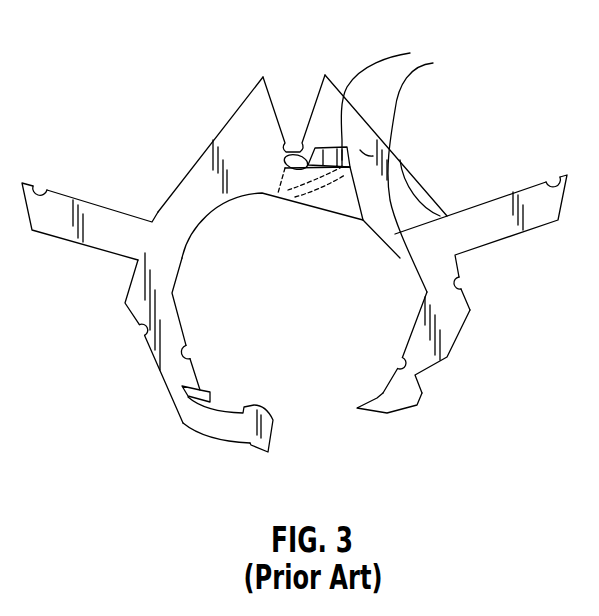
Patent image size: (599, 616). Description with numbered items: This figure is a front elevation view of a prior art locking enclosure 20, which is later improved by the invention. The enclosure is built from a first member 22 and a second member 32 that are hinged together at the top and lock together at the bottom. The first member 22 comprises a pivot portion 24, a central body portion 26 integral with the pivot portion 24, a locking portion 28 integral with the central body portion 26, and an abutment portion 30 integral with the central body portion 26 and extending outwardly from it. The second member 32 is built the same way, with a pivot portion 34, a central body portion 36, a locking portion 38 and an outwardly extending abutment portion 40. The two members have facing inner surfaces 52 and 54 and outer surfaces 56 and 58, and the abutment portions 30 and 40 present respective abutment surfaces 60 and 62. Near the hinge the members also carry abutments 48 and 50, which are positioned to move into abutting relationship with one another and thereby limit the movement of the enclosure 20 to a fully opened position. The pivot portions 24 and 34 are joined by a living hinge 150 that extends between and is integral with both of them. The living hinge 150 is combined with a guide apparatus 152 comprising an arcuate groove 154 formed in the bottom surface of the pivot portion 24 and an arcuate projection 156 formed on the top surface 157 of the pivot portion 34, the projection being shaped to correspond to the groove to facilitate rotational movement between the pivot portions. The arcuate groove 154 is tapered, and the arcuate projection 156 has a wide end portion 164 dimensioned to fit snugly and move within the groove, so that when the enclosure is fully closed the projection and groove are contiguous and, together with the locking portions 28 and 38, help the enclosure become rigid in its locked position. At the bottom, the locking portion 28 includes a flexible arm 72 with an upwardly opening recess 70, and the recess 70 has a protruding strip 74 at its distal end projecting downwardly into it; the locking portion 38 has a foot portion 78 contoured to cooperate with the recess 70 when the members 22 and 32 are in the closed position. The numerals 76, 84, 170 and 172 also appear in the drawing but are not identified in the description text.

The locking enclosure 20 is at (126, 104).
The first member 22 is at (151, 180).
The pivot portion 24 is at (262, 183).
The central body portion 26 is at (170, 258).
The locking portion 28 is at (190, 415).
The abutment portion 30 is at (53, 223).
The second member 32 is at (456, 181).
The pivot portion 34 is at (400, 160).
The central body portion 36 is at (427, 272).
The locking portion 38 is at (452, 322).
The abutment portion 40 is at (510, 227).
The abutment 48 is at (257, 97).
The abutment 50 is at (335, 92).
The inner surface 52 is at (195, 344).
The inner surface 54 is at (400, 363).
The outer surface 56 is at (140, 333).
The outer surface 58 is at (465, 283).
The abutment surface 60 is at (36, 186).
The abutment surface 62 is at (553, 180).
The recess 70 is at (225, 408).
The flexible arm 72 is at (253, 445).
The protruding strip 74 is at (197, 388).
The hook tip 76 is at (275, 410).
The foot portion 78 is at (372, 400).
The right foot 84 is at (412, 407).
The living hinge 150 is at (294, 122).
The guide apparatus 152 is at (338, 236).
The arcuate groove 154 is at (313, 208).
The arcuate projection 156 is at (362, 150).
The top surface 157 is at (433, 63).
The wide end portion 164 is at (384, 94).
The connector 170 is at (400, 153).
The hood edge 172 is at (410, 222).